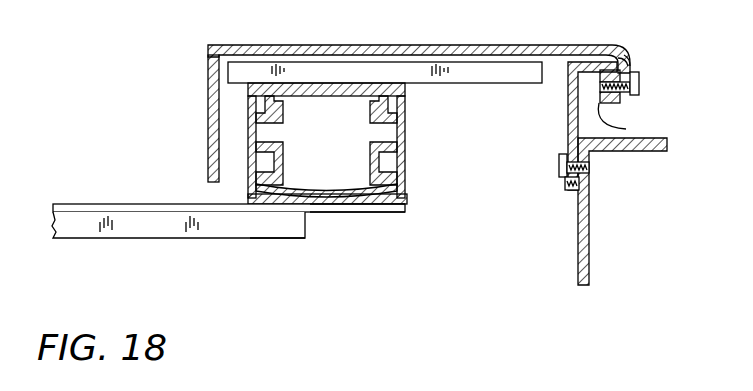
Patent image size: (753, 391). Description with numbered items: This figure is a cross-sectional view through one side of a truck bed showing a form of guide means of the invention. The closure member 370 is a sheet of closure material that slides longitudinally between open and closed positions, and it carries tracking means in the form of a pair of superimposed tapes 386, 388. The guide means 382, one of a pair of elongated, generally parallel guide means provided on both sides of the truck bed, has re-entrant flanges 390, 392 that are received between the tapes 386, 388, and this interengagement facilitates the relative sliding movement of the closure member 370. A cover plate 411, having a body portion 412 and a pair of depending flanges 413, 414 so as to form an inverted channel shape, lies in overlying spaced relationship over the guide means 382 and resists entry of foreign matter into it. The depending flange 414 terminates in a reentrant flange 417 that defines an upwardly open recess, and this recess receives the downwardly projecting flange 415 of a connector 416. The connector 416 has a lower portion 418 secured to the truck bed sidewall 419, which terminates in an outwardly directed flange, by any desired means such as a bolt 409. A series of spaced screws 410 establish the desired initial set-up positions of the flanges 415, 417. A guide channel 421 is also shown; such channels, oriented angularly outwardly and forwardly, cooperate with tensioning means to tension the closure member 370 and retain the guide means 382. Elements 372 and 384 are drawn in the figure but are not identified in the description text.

The closure member 370 is at (161, 205).
The circuit board 372 is at (153, 228).
The guide means 382 is at (349, 82).
The base plate 384 is at (410, 195).
The tape 386 is at (350, 190).
The tape 388 is at (357, 207).
The re-entrant flange 390 is at (383, 204).
The re-entrant flange 392 is at (250, 238).
The bolt 409 is at (561, 166).
The screw 410 is at (640, 81).
The cover plate 411 is at (389, 94).
The body portion 412 is at (268, 44).
The depending flange 413 is at (208, 113).
The depending flange 414 is at (630, 56).
The downwardly projecting flange 415 is at (627, 62).
The connector 416 is at (592, 198).
The reentrant flange 417 is at (626, 129).
The lower portion 418 is at (567, 189).
The truck bed sidewall 419 is at (590, 248).
The guide channel 421 is at (462, 74).